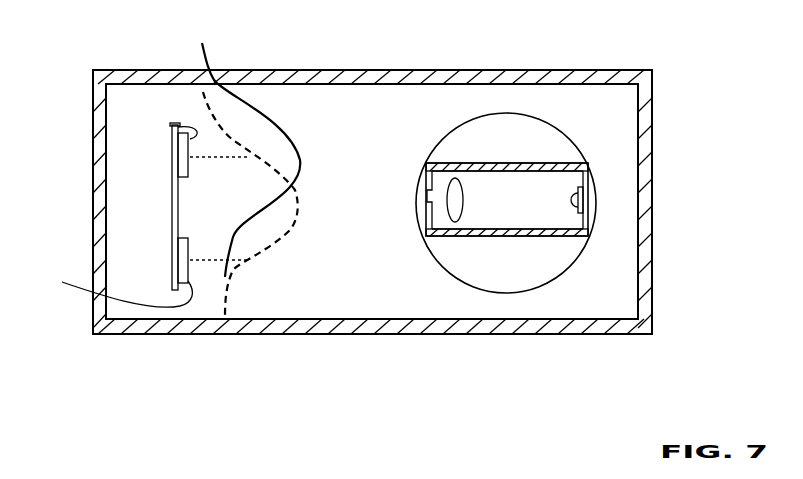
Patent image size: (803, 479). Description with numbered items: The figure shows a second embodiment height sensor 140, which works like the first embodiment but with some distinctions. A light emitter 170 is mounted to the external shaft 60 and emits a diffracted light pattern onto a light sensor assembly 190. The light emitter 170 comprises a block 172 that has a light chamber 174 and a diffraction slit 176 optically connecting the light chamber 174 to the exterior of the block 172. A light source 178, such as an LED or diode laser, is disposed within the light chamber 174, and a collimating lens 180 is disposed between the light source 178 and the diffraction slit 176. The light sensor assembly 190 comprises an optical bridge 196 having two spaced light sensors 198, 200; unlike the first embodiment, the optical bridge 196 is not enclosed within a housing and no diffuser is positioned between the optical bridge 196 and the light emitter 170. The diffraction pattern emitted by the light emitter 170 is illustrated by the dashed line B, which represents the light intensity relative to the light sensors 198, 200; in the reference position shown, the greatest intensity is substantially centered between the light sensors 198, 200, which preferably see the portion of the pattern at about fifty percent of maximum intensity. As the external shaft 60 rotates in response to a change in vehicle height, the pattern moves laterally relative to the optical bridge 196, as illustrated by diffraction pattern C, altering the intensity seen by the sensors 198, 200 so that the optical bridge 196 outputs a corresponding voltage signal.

The height sensor 140 is at (704, 28).
The external shaft 60 is at (543, 120).
The light emitter 170 is at (455, 162).
The block 172 is at (490, 163).
The light chamber 174 is at (551, 216).
The diffraction slit 176 is at (430, 203).
The light source 178 is at (590, 190).
The collimating lens 180 is at (447, 215).
The light sensor assembly 190 is at (171, 200).
The optical bridge 196 is at (172, 168).
The light sensor 198 is at (172, 125).
The light sensor 200 is at (108, 291).
The dashed line B is at (293, 230).
The diffraction pattern C is at (287, 140).